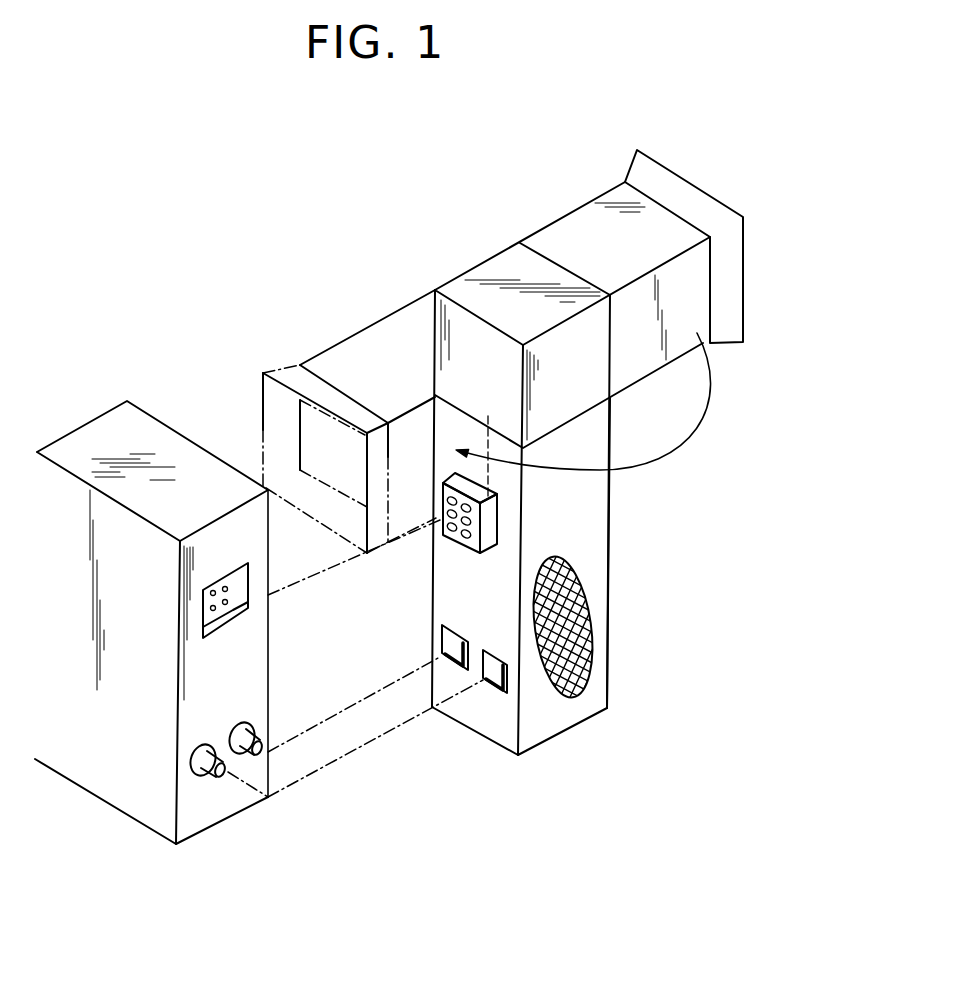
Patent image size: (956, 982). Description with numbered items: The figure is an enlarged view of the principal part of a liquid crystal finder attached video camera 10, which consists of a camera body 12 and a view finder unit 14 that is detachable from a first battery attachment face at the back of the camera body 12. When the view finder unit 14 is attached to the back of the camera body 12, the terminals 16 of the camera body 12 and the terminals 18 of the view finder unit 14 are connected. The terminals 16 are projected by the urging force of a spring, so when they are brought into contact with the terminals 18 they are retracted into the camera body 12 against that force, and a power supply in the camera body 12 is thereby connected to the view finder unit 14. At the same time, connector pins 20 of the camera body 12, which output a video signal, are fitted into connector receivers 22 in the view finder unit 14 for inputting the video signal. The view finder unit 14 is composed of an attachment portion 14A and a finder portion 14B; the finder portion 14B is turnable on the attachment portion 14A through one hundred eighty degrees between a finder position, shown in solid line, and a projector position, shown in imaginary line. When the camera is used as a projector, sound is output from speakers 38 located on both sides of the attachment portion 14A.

The video camera 10 is at (250, 328).
The camera body 12 is at (146, 405).
The view finder unit 14 is at (566, 206).
The attachment portion 14A is at (587, 523).
The finder portion 14B is at (398, 310).
The terminals 16 is at (224, 768).
The terminals 18 is at (455, 665).
The connector pins 20 is at (233, 590).
The connector receivers 22 is at (470, 542).
The speakers 38 is at (563, 690).